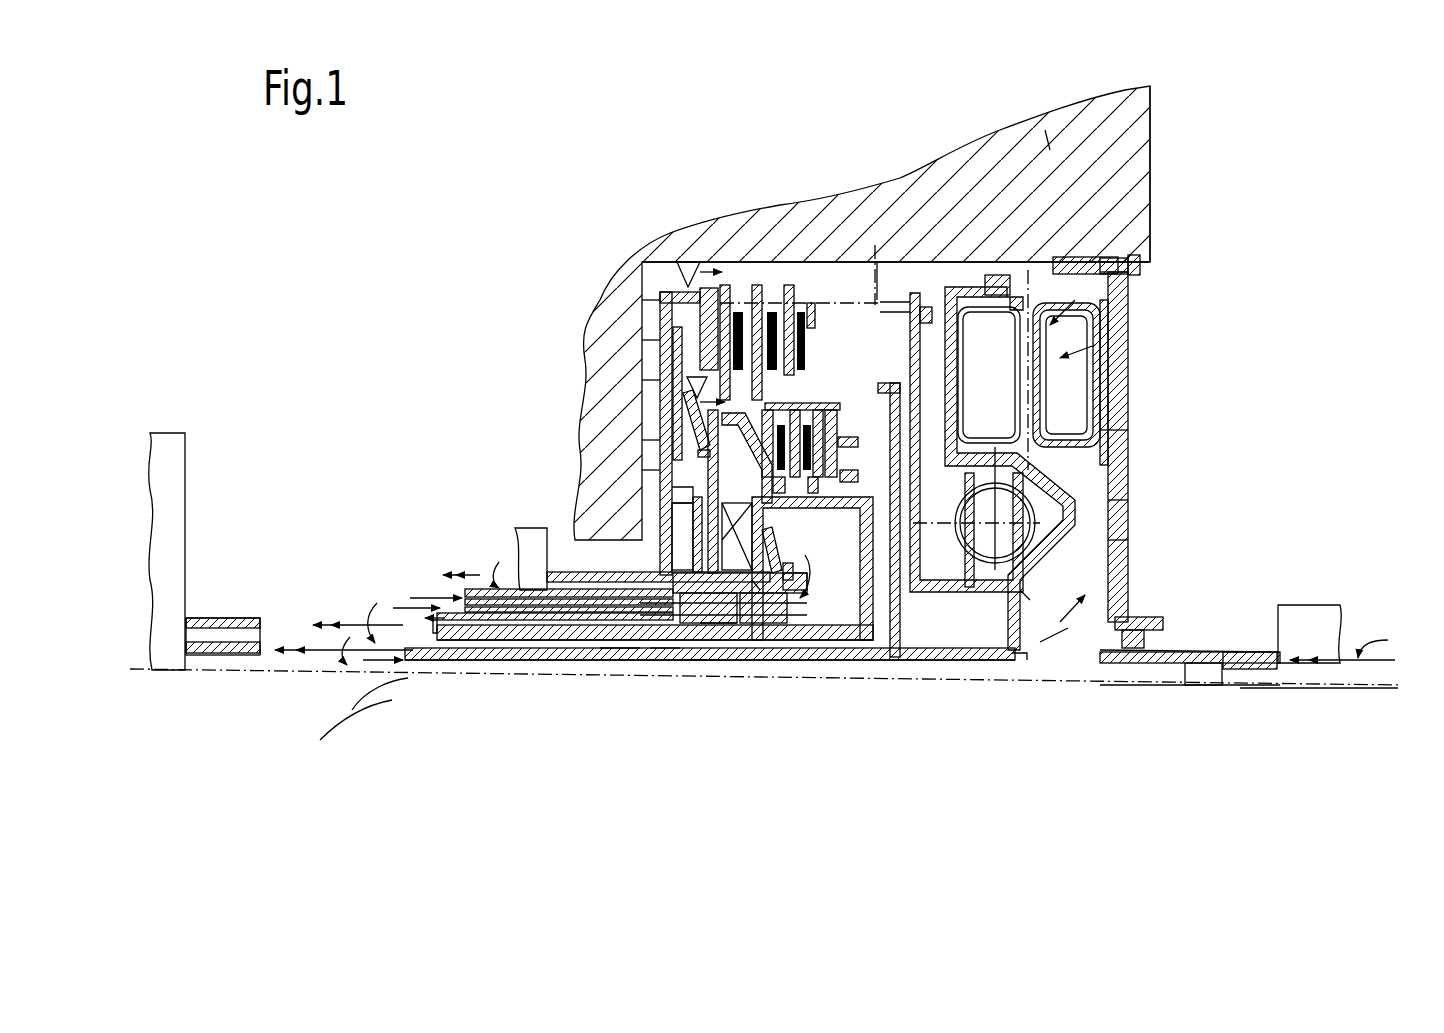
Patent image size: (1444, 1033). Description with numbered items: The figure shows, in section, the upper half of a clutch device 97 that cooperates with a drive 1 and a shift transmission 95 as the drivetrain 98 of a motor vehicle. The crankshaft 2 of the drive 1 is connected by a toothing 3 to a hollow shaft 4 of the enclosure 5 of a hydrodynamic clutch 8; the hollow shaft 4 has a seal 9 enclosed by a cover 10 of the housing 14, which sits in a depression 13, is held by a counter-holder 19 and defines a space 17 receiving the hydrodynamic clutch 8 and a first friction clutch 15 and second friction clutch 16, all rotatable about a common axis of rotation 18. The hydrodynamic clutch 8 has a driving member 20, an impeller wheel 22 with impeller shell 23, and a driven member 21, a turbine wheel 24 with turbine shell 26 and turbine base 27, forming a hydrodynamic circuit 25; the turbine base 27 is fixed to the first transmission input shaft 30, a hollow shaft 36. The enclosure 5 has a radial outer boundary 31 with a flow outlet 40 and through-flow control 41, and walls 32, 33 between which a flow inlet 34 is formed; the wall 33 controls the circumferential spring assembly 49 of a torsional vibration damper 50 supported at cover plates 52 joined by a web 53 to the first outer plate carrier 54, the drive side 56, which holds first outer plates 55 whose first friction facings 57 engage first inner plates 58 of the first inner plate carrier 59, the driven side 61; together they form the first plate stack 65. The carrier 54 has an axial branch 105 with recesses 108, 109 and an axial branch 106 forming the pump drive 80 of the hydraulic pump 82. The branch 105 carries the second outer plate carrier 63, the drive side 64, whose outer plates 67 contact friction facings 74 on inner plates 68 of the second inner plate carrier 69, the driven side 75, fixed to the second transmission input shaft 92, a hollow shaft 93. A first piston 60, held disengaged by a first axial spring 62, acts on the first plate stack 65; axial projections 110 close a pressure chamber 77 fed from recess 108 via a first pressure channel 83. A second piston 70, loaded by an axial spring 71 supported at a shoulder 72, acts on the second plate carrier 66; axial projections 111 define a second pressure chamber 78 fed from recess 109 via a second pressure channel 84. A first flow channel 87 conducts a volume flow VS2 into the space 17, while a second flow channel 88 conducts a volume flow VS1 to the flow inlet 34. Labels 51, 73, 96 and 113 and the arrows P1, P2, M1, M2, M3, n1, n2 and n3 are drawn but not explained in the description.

The drive 1 is at (1293, 612).
The crankshaft 2 is at (1240, 685).
The toothing 3 is at (1240, 655).
The hollow shaft 4 is at (1200, 652).
The enclosure 5 is at (1128, 480).
The hydrodynamic clutch 8 is at (1125, 325).
The seal 9 is at (1132, 635).
The cover 10 is at (1128, 400).
The depression 13 is at (1122, 258).
The housing 14 is at (1050, 150).
The first friction clutch 15 is at (735, 290).
The second friction clutch 16 is at (878, 262).
The space 17 is at (1140, 262).
The axis of rotation 18 is at (1340, 688).
The counter-holder 19 is at (1128, 266).
The driving member 20 is at (1108, 432).
The driven member 21 is at (1128, 532).
The impeller wheel 22 is at (1100, 343).
The impeller shell 23 is at (1096, 363).
The turbine wheel 24 is at (990, 275).
The hydrodynamic circuit 25 is at (1122, 258).
The turbine shell 26 is at (962, 290).
The turbine base 27 is at (1128, 505).
The first transmission input shaft 30 is at (800, 620).
The radial outer boundary 31 is at (1090, 260).
The wall 32 is at (1128, 453).
The wall 33 is at (925, 600).
The flow inlet 34 is at (1030, 655).
The hollow shaft 36 is at (628, 640).
The flow outlet 40 is at (1016, 300).
The through-flow control 41 is at (1043, 300).
The circumferential spring assembly 49 is at (1060, 600).
The torsional vibration damper 50 is at (997, 570).
The support 51 is at (1020, 650).
The cover plates 52 is at (975, 600).
The web 53 is at (895, 657).
The first outer plate carrier 54 is at (815, 305).
The first outer plates 55 is at (708, 290).
The drive side 56 is at (800, 312).
The first friction facings 57 is at (740, 312).
The first inner plates 58 is at (675, 355).
The first inner plate carrier 59 is at (685, 400).
The first piston 60 is at (662, 335).
The driven side 61 is at (665, 298).
The first axial spring 62 is at (690, 425).
The second outer plate carrier 63 is at (670, 440).
The drive side 64 is at (665, 465).
The first plate stack 65 is at (676, 330).
The second plate carrier 66 is at (820, 412).
The outer plates 67 is at (790, 420).
The inner plates 68 is at (862, 510).
The second inner plate carrier 69 is at (830, 600).
The second piston 70 is at (712, 595).
The axial spring 71 is at (730, 600).
The shoulder 72 is at (770, 312).
The disc 73 is at (850, 440).
The friction facings 74 is at (753, 515).
The driven side 75 is at (845, 468).
The pressure chamber 77 is at (610, 663).
The second pressure chamber 78 is at (690, 663).
The pump drive 80 is at (565, 573).
The hydraulic pump 82 is at (528, 552).
The first pressure channel 83 is at (522, 622).
The second pressure channel 84 is at (492, 614).
The first flow channel 87 is at (630, 648).
The second flow channel 88 is at (578, 668).
The second transmission input shaft 92 is at (478, 606).
The hollow shaft 93 is at (470, 600).
The shift transmission 95 is at (192, 462).
The shaft 96 is at (175, 540).
The clutch device 97 is at (600, 252).
The drivetrain 98 is at (1165, 292).
The axial branch 105 is at (770, 620).
The axial branch 106 is at (542, 663).
The recess 108 is at (653, 645).
The recess 109 is at (690, 623).
The axial projection 110 is at (680, 540).
The axial projection 111 is at (775, 540).
The seal 113 is at (745, 590).
The force P1 is at (430, 598).
The force P2 is at (420, 598).
The torque M1 is at (1365, 671).
The torque M2 is at (355, 609).
The torque M3 is at (344, 669).
The speed n1 is at (1383, 639).
The speed n2 is at (396, 614).
The speed n3 is at (361, 666).
The volume flow VS1 is at (1057, 629).
The volume flow VS2 is at (831, 576).